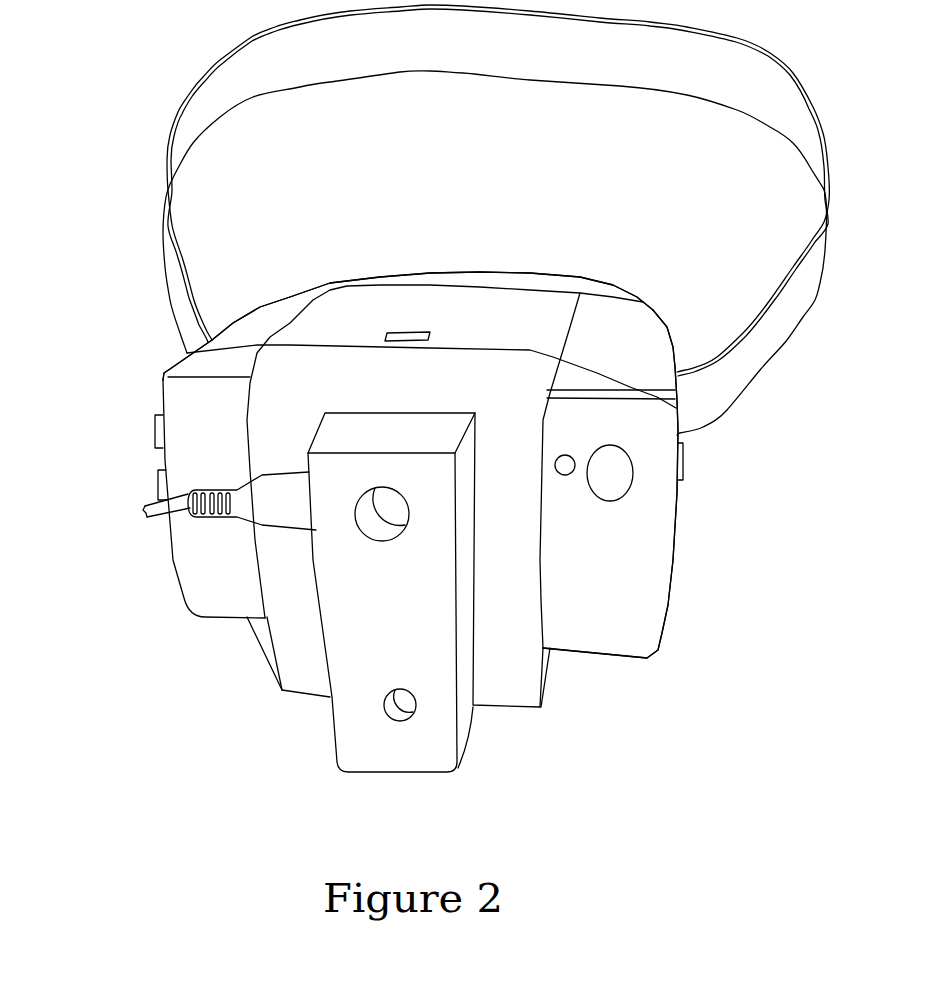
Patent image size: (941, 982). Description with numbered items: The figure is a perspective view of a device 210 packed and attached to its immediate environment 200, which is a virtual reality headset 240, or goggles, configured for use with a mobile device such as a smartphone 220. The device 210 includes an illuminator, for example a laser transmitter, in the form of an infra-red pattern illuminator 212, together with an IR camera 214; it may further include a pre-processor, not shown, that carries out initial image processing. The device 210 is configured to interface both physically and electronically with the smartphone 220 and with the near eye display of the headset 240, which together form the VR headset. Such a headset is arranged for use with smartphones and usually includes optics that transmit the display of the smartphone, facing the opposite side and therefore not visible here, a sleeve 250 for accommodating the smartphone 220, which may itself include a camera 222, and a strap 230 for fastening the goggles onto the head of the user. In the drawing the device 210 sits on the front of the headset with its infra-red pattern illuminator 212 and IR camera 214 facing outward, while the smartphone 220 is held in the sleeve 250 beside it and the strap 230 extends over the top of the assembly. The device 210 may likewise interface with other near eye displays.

The immediate environment 200 is at (46, 34).
The device 210 is at (467, 752).
The infra-red pattern illuminator 212 is at (400, 704).
The IR camera 214 is at (380, 515).
The smartphone 220 is at (633, 617).
The camera 222 is at (610, 470).
The strap 230 is at (807, 278).
The virtual reality headset 240 is at (375, 287).
The sleeve 250 is at (262, 432).